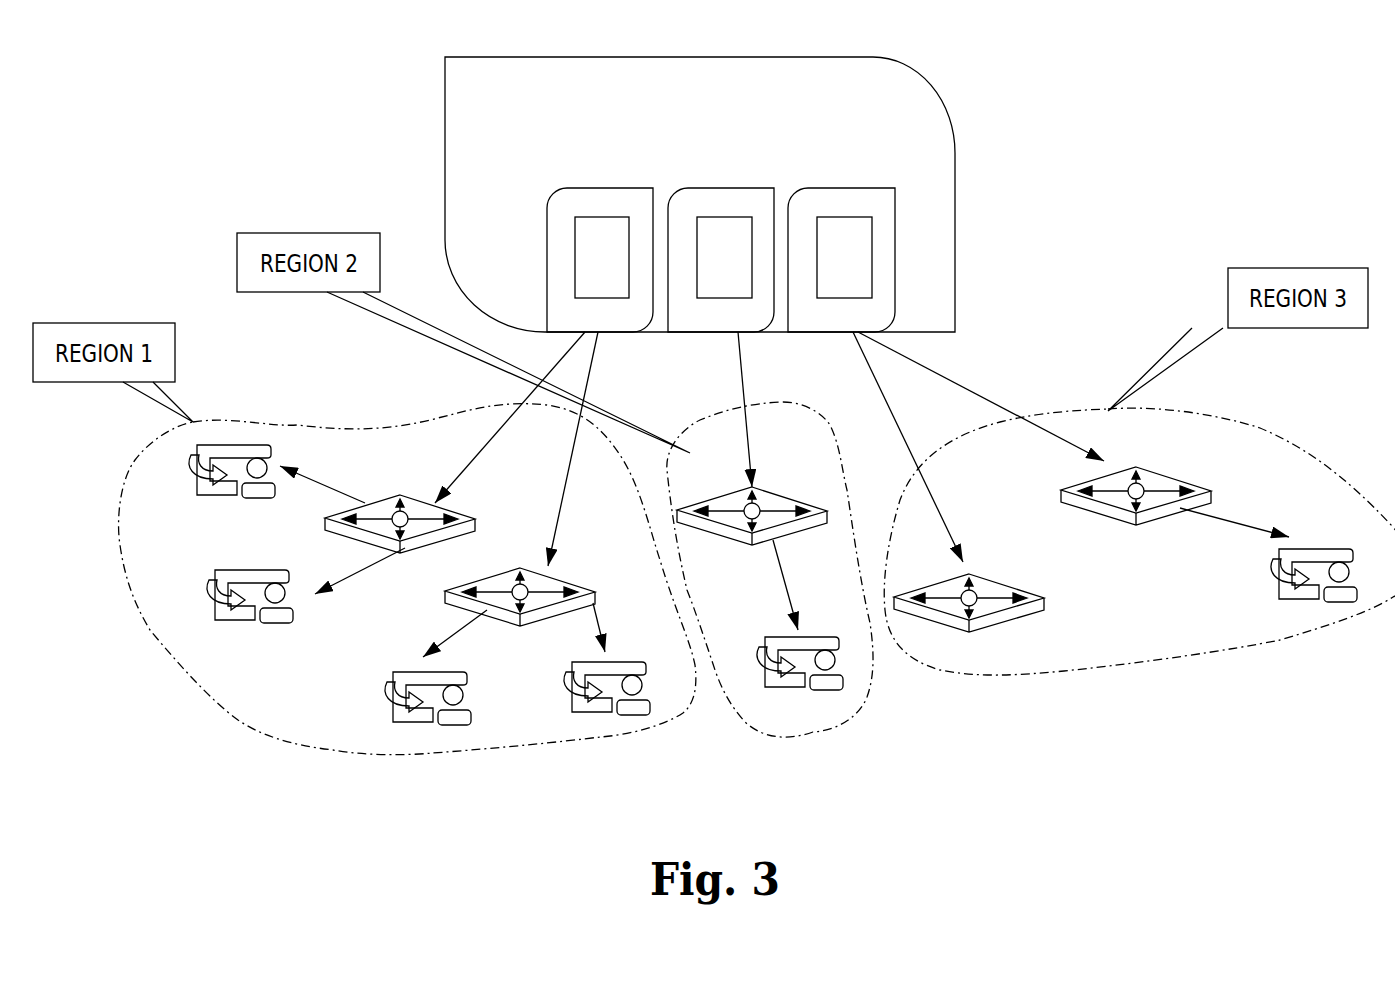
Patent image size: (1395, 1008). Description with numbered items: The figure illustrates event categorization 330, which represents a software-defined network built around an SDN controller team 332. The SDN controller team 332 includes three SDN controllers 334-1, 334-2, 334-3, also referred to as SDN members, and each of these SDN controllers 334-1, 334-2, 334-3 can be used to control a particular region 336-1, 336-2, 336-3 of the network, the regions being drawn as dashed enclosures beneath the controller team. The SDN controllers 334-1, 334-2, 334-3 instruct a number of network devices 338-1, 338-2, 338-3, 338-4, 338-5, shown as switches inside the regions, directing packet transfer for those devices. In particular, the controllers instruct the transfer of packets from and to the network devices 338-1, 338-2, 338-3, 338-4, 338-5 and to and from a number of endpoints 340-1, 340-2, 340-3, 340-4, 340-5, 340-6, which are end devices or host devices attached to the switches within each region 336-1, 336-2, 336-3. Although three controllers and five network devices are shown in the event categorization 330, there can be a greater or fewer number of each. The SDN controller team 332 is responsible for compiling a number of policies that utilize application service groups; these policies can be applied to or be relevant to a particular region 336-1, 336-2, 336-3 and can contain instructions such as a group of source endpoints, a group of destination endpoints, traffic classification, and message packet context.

The event categorization 330 is at (1106, 74).
The SDN controller team 332 is at (956, 163).
The SDN controller 334-1 is at (603, 188).
The SDN controller 334-2 is at (725, 188).
The SDN controller 334-3 is at (845, 188).
The region 336-1 is at (238, 722).
The region 336-2 is at (763, 738).
The region 336-3 is at (1037, 675).
The network device 338-1 is at (463, 508).
The network device 338-2 is at (567, 577).
The network device 338-3 is at (815, 500).
The network device 338-4 is at (1013, 588).
The network device 338-5 is at (1194, 483).
The endpoint 340-1 is at (187, 475).
The endpoint 340-2 is at (205, 600).
The endpoint 340-3 is at (433, 728).
The endpoint 340-4 is at (615, 718).
The endpoint 340-5 is at (847, 667).
The endpoint 340-6 is at (1269, 578).